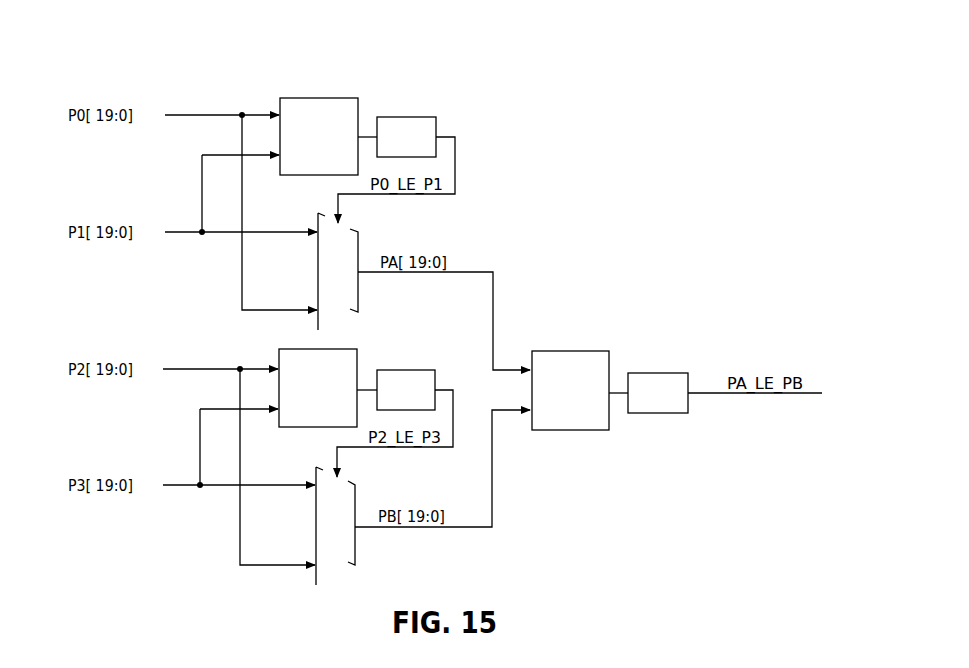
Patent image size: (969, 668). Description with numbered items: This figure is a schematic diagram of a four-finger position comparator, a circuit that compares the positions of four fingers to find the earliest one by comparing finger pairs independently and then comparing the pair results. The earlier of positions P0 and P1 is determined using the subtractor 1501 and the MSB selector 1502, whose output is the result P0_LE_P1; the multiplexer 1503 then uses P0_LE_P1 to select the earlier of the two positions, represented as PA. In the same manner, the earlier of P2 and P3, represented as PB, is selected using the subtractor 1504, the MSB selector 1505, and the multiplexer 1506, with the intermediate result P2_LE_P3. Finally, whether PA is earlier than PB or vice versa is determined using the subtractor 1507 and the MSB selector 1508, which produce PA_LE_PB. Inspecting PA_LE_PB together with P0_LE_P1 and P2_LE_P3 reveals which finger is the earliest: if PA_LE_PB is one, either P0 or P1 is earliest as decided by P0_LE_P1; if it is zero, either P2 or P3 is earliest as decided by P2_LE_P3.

The subtractor 1501 is at (323, 94).
The MSB selector 1502 is at (438, 117).
The multiplexer 1503 is at (368, 242).
The subtractor 1504 is at (323, 349).
The MSB selector 1505 is at (437, 369).
The multiplexer 1506 is at (368, 501).
The subtractor 1507 is at (573, 347).
The MSB selector 1508 is at (689, 371).